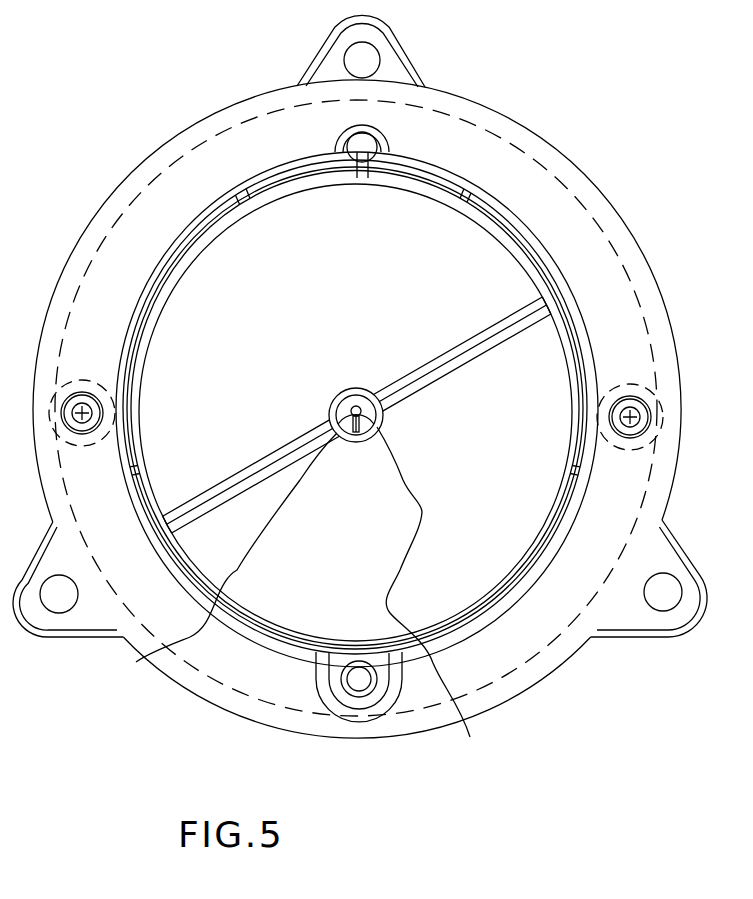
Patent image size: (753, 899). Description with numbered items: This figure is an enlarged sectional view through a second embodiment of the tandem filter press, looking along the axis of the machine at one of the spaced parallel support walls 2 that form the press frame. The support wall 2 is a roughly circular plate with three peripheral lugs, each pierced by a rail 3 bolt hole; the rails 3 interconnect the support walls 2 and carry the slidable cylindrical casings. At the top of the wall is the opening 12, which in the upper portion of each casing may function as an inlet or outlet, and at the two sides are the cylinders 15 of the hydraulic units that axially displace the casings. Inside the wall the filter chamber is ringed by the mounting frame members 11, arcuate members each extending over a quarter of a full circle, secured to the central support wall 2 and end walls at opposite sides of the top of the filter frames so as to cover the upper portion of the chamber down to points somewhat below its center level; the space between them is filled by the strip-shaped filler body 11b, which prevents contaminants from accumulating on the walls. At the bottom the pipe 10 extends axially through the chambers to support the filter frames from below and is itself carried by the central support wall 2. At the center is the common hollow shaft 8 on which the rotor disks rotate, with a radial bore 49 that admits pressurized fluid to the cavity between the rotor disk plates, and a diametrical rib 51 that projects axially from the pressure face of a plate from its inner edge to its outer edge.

The support wall 2 is at (493, 690).
The rail 3 is at (372, 63).
The shaft 8 is at (356, 403).
The pipe 10 is at (355, 680).
The mounting frame member 11 is at (196, 258).
The filler body 11b is at (453, 186).
The opening 12 is at (366, 150).
The cylinder 15 is at (84, 406).
The bore 49 is at (357, 434).
The rib 51 is at (432, 360).